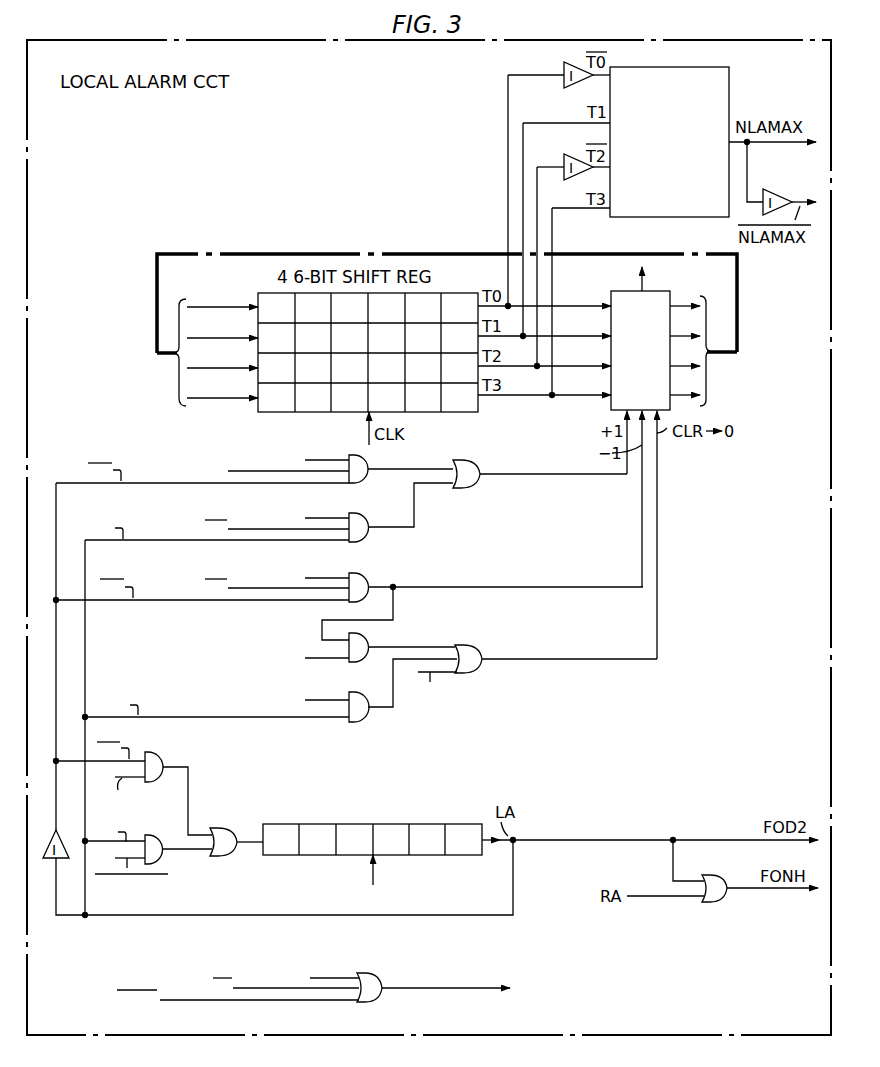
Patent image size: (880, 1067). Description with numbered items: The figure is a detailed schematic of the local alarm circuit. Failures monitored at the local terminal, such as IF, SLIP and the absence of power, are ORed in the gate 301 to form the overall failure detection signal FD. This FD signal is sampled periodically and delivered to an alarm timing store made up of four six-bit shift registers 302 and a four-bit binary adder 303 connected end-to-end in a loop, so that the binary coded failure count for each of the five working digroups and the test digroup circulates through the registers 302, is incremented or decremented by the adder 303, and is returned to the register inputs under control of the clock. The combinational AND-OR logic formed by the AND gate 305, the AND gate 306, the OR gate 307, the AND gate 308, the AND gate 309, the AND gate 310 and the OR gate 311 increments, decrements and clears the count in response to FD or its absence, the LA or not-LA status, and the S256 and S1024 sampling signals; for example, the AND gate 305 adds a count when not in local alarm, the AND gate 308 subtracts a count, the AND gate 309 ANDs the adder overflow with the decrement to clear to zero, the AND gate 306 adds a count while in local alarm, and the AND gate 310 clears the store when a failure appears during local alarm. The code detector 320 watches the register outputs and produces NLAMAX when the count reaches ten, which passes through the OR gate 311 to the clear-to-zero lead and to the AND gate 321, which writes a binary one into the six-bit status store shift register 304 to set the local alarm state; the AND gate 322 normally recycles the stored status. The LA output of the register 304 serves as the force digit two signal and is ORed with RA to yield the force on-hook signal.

The OR gate 301 is at (367, 975).
The six-bit shift registers 302 is at (261, 332).
The four-bit binary adder 303 is at (618, 290).
The status store shift register 304 is at (282, 857).
The AND gate 305 is at (362, 482).
The AND gate 306 is at (362, 541).
The OR gate 307 is at (476, 462).
The AND gate 308 is at (364, 575).
The AND gate 309 is at (365, 635).
The AND gate 310 is at (362, 721).
The OR gate 311 is at (486, 638).
The code detector 320 is at (729, 72).
The AND gate 321 is at (155, 753).
The AND gate 322 is at (160, 828).